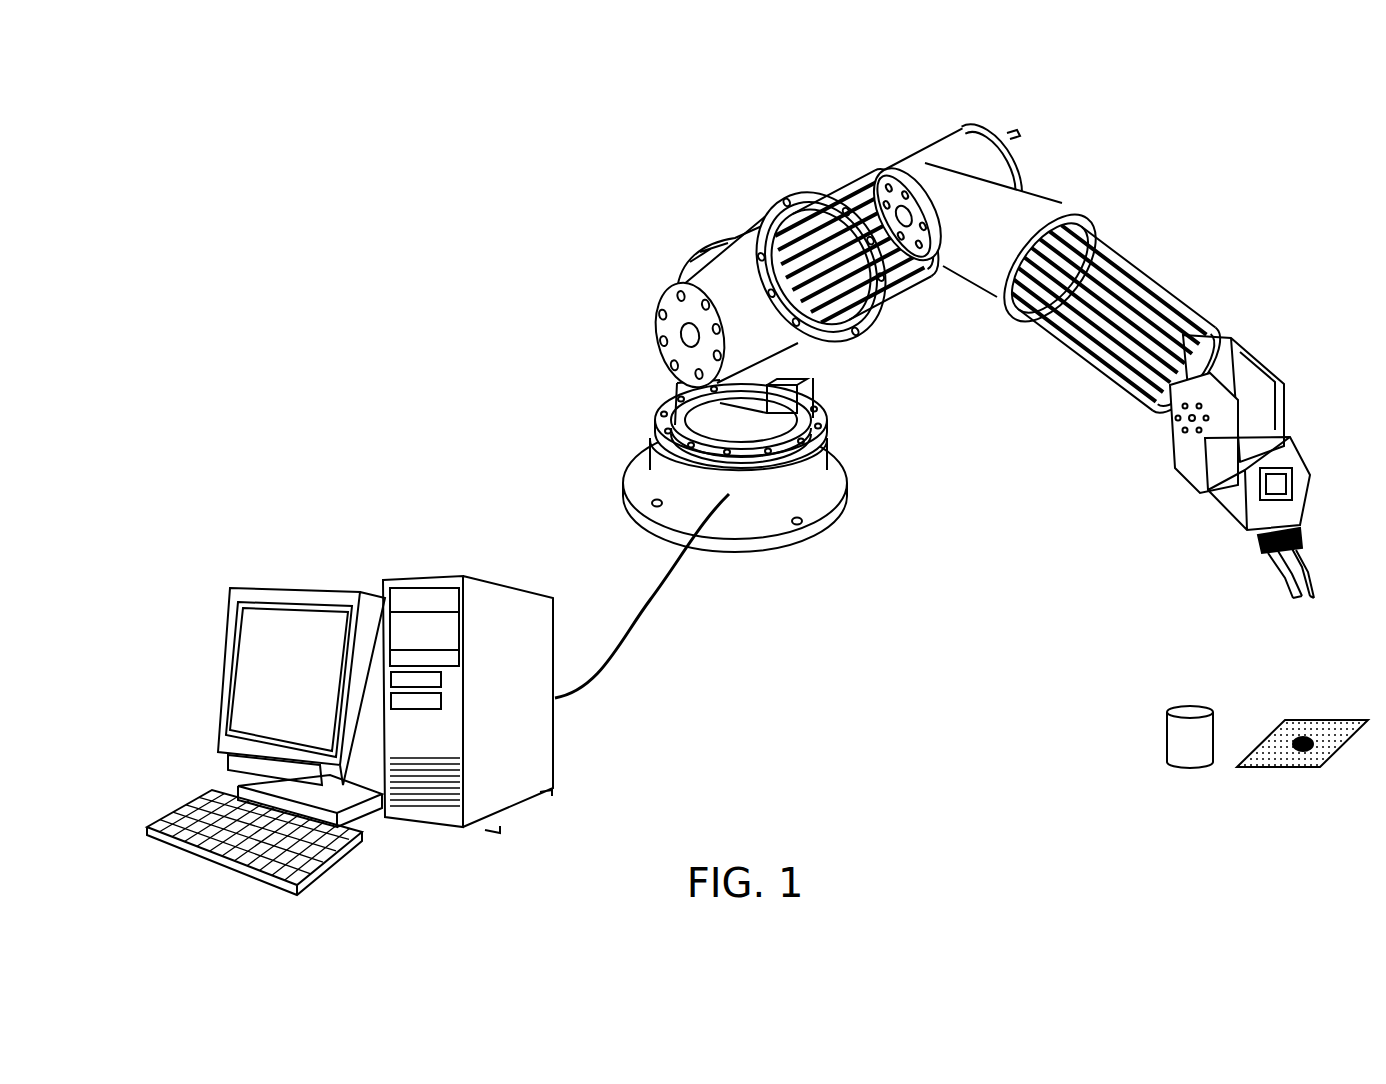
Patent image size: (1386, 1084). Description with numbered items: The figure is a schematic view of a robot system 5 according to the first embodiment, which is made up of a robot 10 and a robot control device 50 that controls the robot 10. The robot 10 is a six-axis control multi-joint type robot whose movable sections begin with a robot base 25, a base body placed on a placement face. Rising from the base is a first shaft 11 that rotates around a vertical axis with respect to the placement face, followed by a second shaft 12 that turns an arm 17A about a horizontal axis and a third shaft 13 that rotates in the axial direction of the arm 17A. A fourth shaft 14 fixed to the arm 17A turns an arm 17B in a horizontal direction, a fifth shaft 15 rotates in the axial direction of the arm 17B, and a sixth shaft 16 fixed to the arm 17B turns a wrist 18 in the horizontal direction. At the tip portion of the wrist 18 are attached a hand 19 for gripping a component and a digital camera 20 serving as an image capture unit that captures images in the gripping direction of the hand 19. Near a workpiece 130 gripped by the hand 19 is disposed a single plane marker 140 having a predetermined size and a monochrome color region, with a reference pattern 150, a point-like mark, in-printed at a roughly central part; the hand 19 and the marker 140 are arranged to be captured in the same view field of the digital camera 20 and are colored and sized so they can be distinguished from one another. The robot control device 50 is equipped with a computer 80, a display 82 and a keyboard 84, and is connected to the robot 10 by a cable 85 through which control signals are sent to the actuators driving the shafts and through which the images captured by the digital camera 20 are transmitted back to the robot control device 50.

The robot system 5 is at (747, 475).
The robot 10 is at (992, 368).
The first shaft 11 is at (846, 407).
The second shaft 12 is at (686, 318).
The third shaft 13 is at (775, 196).
The fourth shaft 14 is at (991, 119).
The fifth shaft 15 is at (1014, 341).
The sixth shaft 16 is at (1295, 370).
The arm 17A is at (921, 298).
The arm 17B is at (1083, 383).
The wrist 18 is at (1181, 477).
The hand 19 is at (1258, 561).
The digital camera 20 is at (1302, 491).
The robot base 25 is at (862, 487).
The robot control device 50 is at (464, 700).
The computer 80 is at (498, 574).
The display 82 is at (321, 578).
The keyboard 84 is at (168, 797).
The cable 85 is at (623, 605).
The workpiece 130 is at (1187, 776).
The marker 140 is at (1320, 718).
The reference pattern 150 is at (1302, 752).